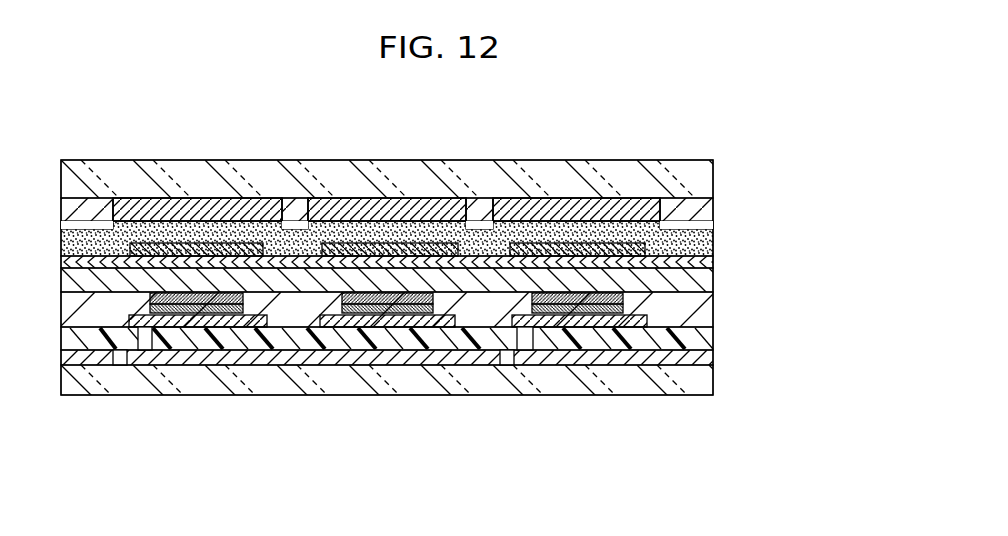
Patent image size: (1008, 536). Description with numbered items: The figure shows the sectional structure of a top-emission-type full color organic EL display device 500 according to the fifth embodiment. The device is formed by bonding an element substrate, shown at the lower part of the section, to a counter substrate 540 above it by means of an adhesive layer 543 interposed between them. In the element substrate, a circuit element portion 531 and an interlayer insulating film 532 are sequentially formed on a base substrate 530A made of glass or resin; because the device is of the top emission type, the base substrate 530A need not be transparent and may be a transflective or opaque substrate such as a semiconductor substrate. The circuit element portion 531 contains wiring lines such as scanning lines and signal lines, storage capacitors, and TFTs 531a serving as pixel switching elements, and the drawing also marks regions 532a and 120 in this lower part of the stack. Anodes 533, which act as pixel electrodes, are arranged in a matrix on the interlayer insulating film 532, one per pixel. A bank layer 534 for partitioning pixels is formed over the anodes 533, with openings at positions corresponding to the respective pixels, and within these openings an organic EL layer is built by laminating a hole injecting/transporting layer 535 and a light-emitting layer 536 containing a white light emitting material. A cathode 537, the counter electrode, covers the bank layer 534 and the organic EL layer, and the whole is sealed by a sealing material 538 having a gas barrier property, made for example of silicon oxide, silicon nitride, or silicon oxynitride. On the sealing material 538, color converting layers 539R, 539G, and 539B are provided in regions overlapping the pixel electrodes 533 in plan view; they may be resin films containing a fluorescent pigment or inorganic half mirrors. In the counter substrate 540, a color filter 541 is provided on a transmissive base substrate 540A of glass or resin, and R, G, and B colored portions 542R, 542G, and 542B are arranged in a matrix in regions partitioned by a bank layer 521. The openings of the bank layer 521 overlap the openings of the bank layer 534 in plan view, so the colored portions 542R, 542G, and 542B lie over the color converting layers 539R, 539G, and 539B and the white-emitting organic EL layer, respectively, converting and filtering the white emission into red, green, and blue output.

The organic EL display device 500 is at (712, 144).
The counter substrate 540 is at (451, 188).
The base substrate 540A is at (713, 176).
The color filter 541 is at (713, 208).
The bank layer 521 is at (100, 193).
The R colored portion 542R is at (140, 200).
The G colored portion 542G is at (443, 197).
The B colored portion 542B is at (607, 197).
The adhesive layer 543 is at (713, 240).
The color converting layer 539R is at (222, 250).
The color converting layer 539G is at (372, 247).
The color converting layer 539B is at (552, 250).
The sealing material 538 is at (713, 262).
The cathode 537 is at (713, 284).
The bank layer 534 is at (713, 318).
The light-emitting layer 536 is at (248, 313).
The hole injecting/transporting layer 535 is at (188, 323).
The anode 533 is at (262, 335).
The interlayer insulating film 532 is at (423, 392).
The contact portion of wiring layer 532a is at (152, 332).
The circuit element portion 531 is at (416, 396).
The TFT 531a is at (125, 352).
The base substrate 530A is at (713, 380).
The element substrate assembly 120 is at (446, 392).